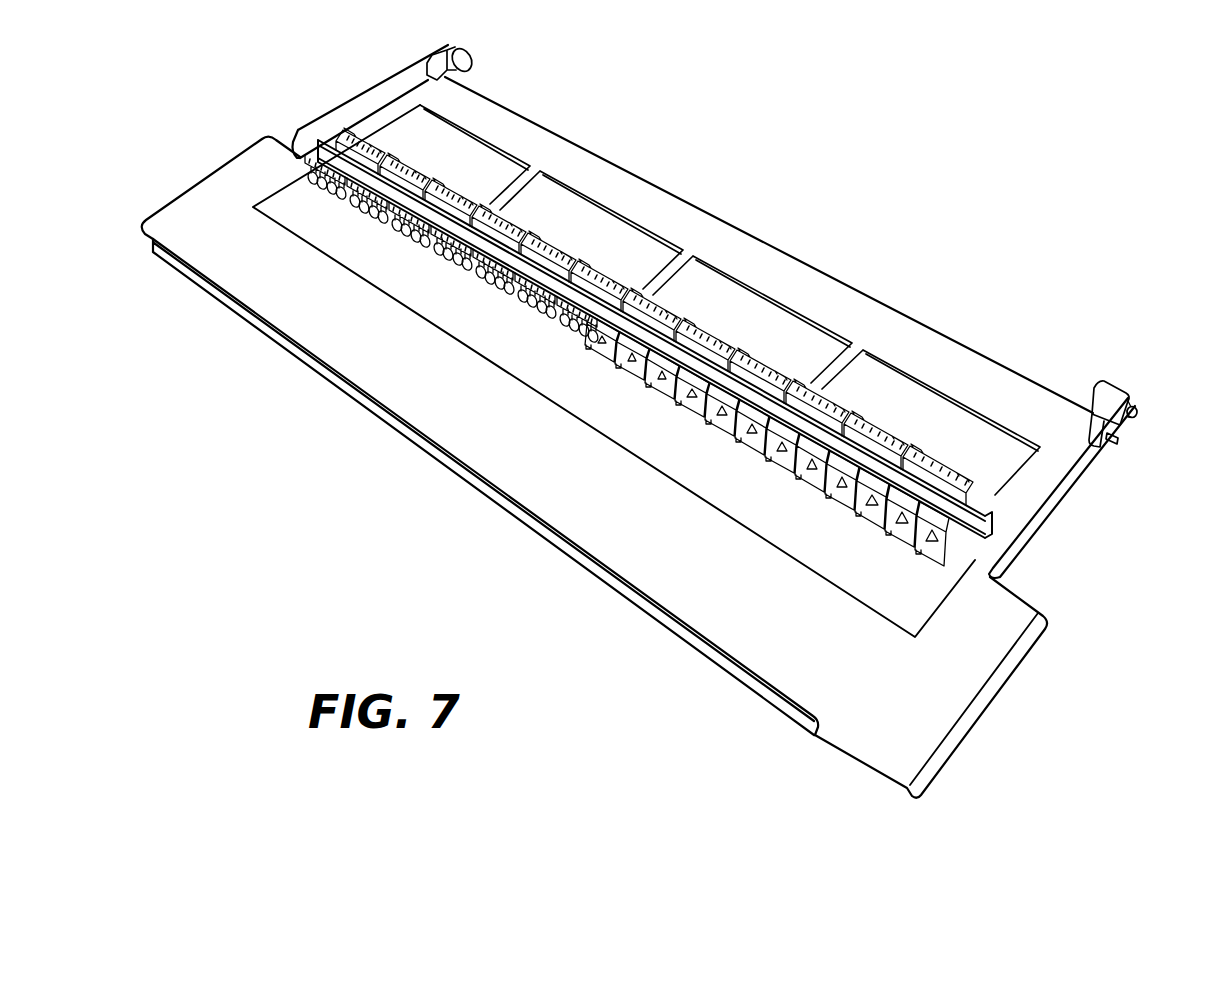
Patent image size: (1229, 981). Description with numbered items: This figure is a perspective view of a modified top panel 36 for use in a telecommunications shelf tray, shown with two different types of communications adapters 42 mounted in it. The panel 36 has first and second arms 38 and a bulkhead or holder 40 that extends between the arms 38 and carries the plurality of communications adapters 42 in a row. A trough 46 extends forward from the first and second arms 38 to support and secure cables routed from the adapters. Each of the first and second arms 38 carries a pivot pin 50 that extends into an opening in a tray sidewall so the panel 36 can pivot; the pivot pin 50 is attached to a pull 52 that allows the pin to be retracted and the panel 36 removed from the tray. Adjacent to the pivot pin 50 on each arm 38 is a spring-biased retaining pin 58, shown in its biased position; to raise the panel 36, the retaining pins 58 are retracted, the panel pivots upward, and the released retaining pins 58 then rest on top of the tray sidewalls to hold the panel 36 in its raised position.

The panel 36 is at (996, 565).
The first and second arms 38 is at (372, 90).
The holder 40 is at (990, 518).
The communications adapters 42 is at (363, 206).
The trough 46 is at (462, 420).
The pivot pin 50 is at (1137, 415).
The pull 52 is at (476, 56).
The retaining pin 58 is at (1118, 440).